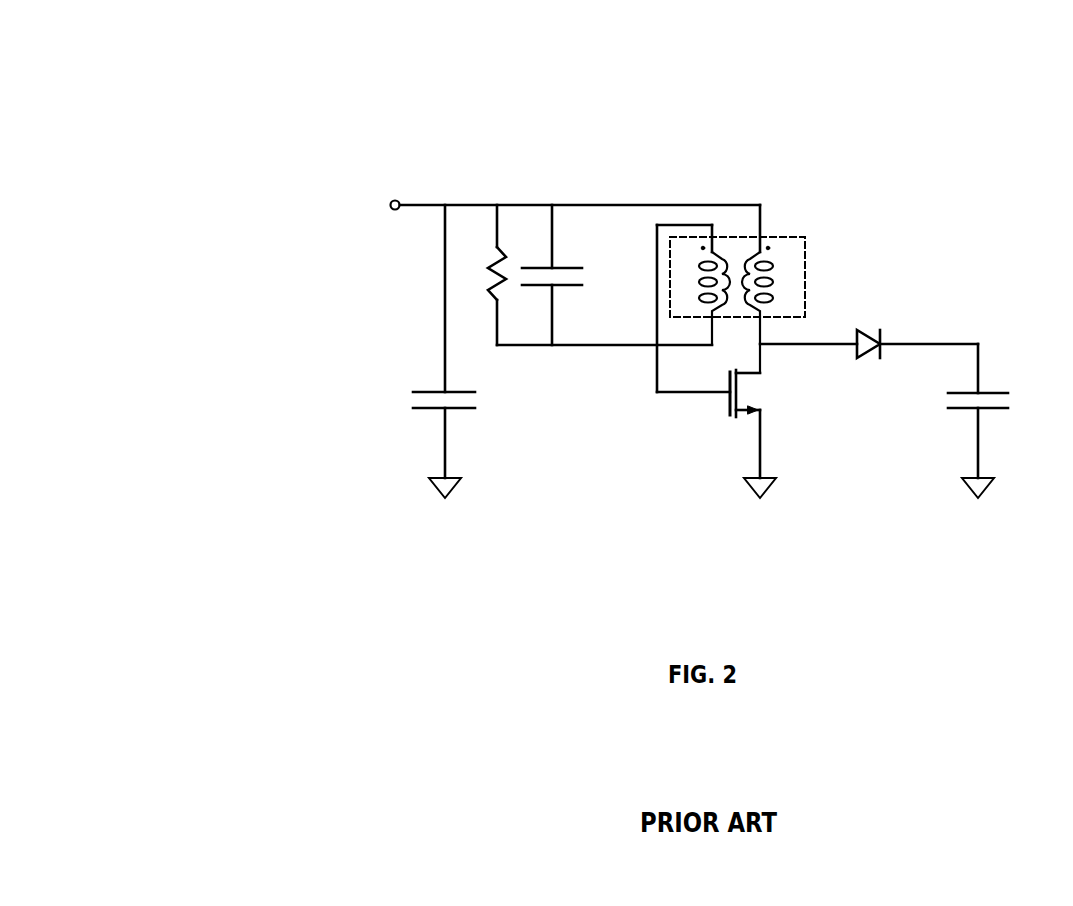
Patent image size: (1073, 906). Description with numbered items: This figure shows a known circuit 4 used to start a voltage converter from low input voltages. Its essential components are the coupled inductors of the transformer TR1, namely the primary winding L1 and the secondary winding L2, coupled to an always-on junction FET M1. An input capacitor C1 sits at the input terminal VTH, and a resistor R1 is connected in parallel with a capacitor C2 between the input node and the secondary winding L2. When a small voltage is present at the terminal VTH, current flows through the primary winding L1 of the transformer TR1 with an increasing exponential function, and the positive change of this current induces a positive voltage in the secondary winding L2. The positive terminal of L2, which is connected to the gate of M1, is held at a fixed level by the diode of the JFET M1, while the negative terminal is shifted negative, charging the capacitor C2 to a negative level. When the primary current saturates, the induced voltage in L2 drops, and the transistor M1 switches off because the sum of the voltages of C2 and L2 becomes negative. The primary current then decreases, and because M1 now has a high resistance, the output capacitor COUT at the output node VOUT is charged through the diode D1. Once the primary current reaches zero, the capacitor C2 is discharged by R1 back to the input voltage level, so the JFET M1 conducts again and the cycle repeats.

The circuit 4 is at (208, 83).
The terminal VTH is at (576, 191).
The input capacitor C1 is at (448, 351).
The resistor R1 is at (482, 275).
The capacitor C2 is at (558, 275).
The transformer TR1 is at (761, 289).
The primary winding L1 is at (770, 289).
The secondary winding L2 is at (702, 295).
The junction FET M1 is at (760, 434).
The diode D1 is at (821, 330).
The output voltage node VOUT is at (929, 328).
The output capacitor COUT is at (993, 421).